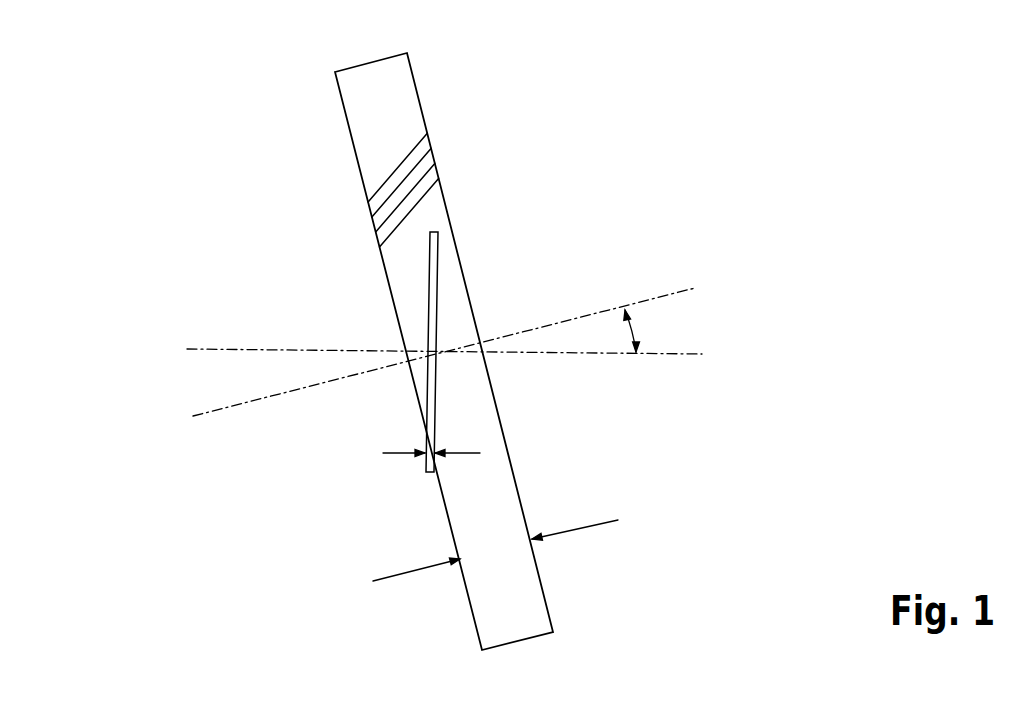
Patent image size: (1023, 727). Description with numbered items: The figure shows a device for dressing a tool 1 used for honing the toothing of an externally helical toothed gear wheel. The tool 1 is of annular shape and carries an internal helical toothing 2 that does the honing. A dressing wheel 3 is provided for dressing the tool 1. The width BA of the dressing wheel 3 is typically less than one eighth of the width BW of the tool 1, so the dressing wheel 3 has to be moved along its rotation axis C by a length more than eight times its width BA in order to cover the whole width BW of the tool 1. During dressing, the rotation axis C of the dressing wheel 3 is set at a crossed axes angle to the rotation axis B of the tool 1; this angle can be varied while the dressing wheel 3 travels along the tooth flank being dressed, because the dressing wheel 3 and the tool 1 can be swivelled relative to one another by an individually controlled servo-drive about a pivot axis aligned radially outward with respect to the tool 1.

The tool 1 is at (370, 120).
The internal helical toothing 2 is at (402, 176).
The dressing wheel 3 is at (435, 267).
The rotation axis of the tool B is at (456, 344).
The rotation axis of the dressing wheel C is at (454, 355).
The width of the dressing wheel BA is at (418, 457).
The width of the tool BW is at (495, 550).